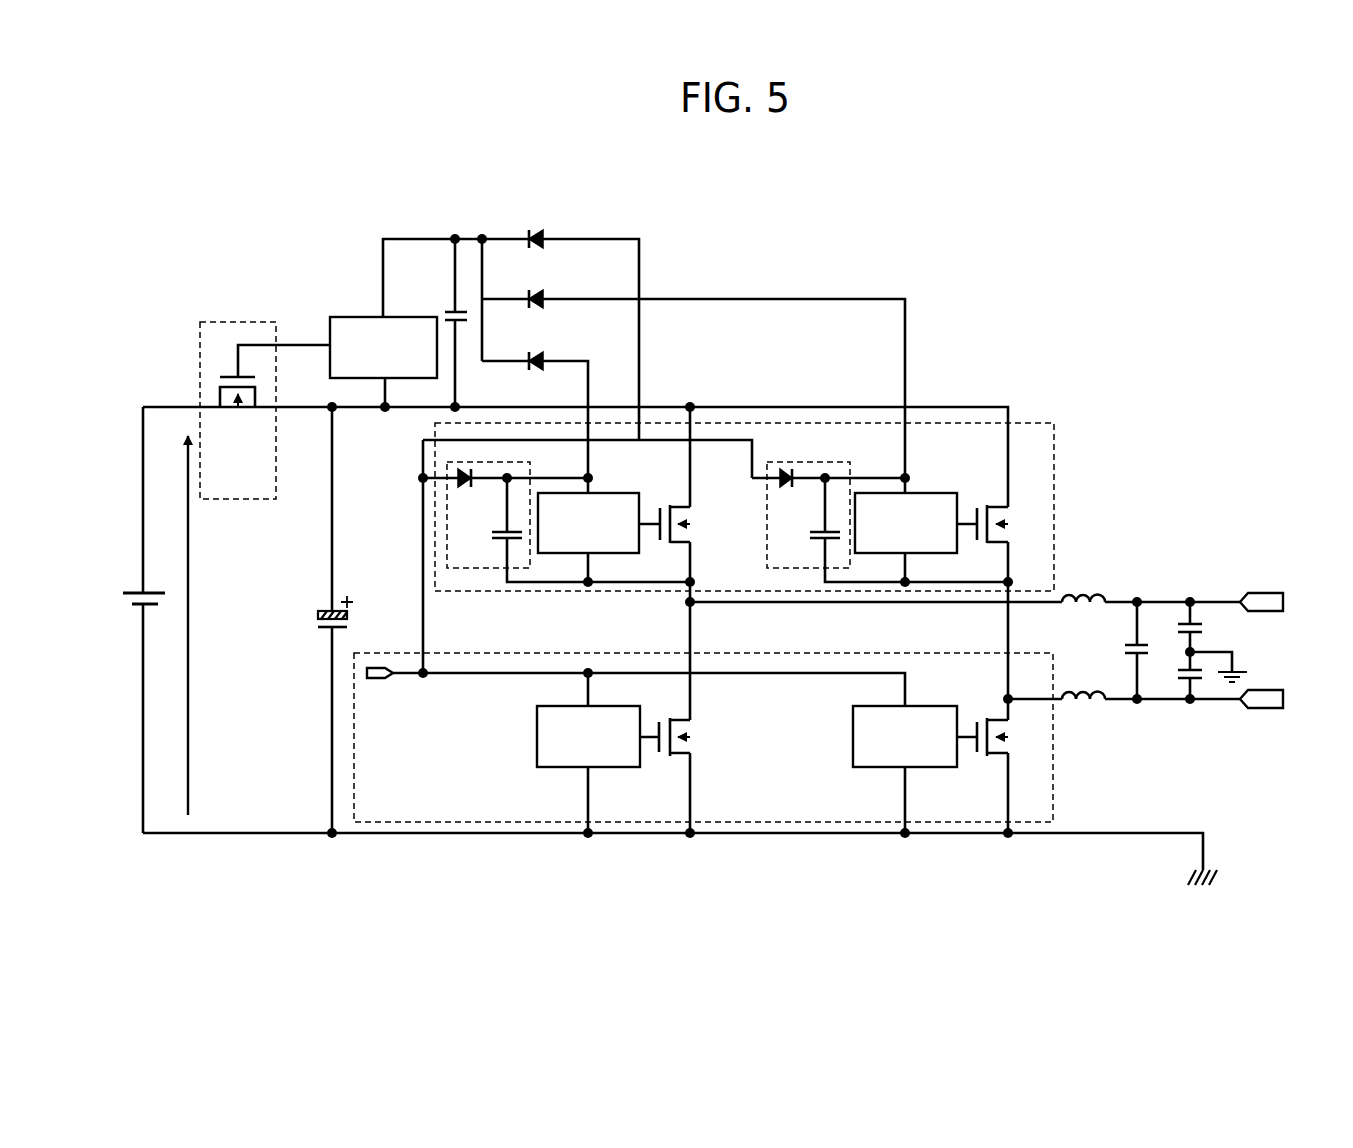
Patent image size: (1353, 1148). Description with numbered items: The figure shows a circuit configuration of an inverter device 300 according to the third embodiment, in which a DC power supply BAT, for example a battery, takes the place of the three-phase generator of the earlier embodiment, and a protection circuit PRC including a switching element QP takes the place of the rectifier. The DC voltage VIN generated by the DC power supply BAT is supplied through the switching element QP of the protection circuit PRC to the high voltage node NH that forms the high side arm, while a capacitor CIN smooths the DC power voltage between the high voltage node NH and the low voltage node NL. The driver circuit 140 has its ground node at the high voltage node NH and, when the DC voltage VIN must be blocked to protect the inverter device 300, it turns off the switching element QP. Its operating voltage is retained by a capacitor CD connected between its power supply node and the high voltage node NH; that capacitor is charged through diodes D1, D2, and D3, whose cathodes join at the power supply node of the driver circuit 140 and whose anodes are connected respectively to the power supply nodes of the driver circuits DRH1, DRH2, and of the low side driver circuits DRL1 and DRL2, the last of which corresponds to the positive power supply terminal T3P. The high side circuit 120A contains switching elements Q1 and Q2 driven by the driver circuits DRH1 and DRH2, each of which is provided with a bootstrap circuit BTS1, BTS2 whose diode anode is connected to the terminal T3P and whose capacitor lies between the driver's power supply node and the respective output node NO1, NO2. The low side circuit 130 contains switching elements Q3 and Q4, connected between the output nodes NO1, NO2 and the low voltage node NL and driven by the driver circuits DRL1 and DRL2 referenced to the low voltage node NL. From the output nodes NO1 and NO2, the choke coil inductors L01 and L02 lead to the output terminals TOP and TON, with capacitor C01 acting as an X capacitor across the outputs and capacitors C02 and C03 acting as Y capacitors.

The inverter device 300 is at (1170, 219).
The DC power supply BAT is at (140, 592).
The DC voltage VIN is at (169, 625).
The protection circuit PRC is at (245, 322).
The switching element QP is at (234, 412).
The driver circuit 140 is at (352, 317).
The capacitor CD is at (452, 311).
The diode D1 is at (546, 358).
The diode D2 is at (546, 296).
The diode D3 is at (546, 236).
The high voltage node NH is at (408, 412).
The capacitor CIN is at (352, 622).
The high side circuit 120A is at (1012, 421).
The bootstrap circuit BTS1 is at (505, 462).
The bootstrap circuit BTS2 is at (815, 462).
The driver circuit DRH1 is at (620, 492).
The driver circuit DRH2 is at (935, 492).
The driver circuit DRL1 is at (560, 768).
The driver circuit DRL2 is at (935, 705).
The switching element Q1 is at (692, 512).
The switching element Q2 is at (1010, 512).
The switching element Q3 is at (700, 730).
The switching element Q4 is at (1012, 736).
The output node NO1 is at (680, 603).
The output node NO2 is at (1000, 626).
The inductor L01 is at (1100, 595).
The inductor L02 is at (1098, 703).
The capacitor C01 is at (1122, 650).
The capacitor C02 is at (1205, 627).
The capacitor C03 is at (1200, 682).
The output terminal TOP is at (1268, 592).
The output terminal TON is at (1270, 710).
The positive power supply terminal T3P is at (382, 680).
The low side circuit 130 is at (1058, 792).
The low voltage node NL is at (368, 838).